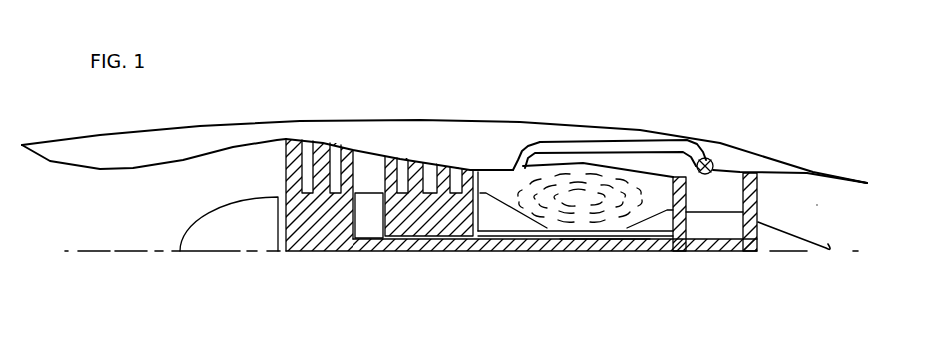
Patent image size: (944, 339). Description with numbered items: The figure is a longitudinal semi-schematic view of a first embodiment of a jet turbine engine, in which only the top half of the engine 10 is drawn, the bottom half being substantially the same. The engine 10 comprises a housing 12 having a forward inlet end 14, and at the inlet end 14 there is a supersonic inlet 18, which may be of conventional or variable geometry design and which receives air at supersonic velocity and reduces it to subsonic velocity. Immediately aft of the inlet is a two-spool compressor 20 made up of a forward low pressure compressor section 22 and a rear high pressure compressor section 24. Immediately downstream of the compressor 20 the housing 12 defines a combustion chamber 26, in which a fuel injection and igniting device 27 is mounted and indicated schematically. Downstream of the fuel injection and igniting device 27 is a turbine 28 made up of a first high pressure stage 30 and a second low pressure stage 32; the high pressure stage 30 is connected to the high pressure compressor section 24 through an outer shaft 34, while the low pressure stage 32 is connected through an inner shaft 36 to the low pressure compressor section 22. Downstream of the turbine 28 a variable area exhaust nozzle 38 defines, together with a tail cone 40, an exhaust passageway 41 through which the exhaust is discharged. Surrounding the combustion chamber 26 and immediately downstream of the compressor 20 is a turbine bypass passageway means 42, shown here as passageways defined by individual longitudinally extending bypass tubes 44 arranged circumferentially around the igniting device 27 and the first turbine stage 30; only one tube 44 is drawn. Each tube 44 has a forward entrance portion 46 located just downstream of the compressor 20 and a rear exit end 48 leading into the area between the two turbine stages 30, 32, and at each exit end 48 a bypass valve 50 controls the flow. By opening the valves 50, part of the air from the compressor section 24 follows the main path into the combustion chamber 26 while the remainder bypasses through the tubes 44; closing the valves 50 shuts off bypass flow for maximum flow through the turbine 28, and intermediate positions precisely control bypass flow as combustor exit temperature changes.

The engine 10 is at (447, 108).
The housing 12 is at (267, 122).
The forward inlet end 14 is at (113, 195).
The supersonic inlet 18 is at (70, 139).
The two-spool compressor 20 is at (403, 257).
The low pressure compressor section 22 is at (328, 142).
The high pressure compressor section 24 is at (413, 163).
The combustion chamber 26 is at (543, 223).
The fuel injection and igniting device 27 is at (630, 212).
The turbine 28 is at (739, 158).
The first high pressure stage 30 is at (687, 203).
The second low pressure stage 32 is at (757, 220).
The outer shaft 34 is at (568, 232).
The inner shaft 36 is at (603, 240).
The variable area exhaust nozzle 38 is at (823, 173).
The tail cone 40 is at (823, 243).
The exhaust passageway 41 is at (817, 205).
The turbine bypass passageway means 42 is at (565, 139).
The bypass tube 44 is at (650, 143).
The forward entrance portion 46 is at (520, 160).
The rear exit end 48 is at (702, 157).
The bypass valve 50 is at (712, 160).